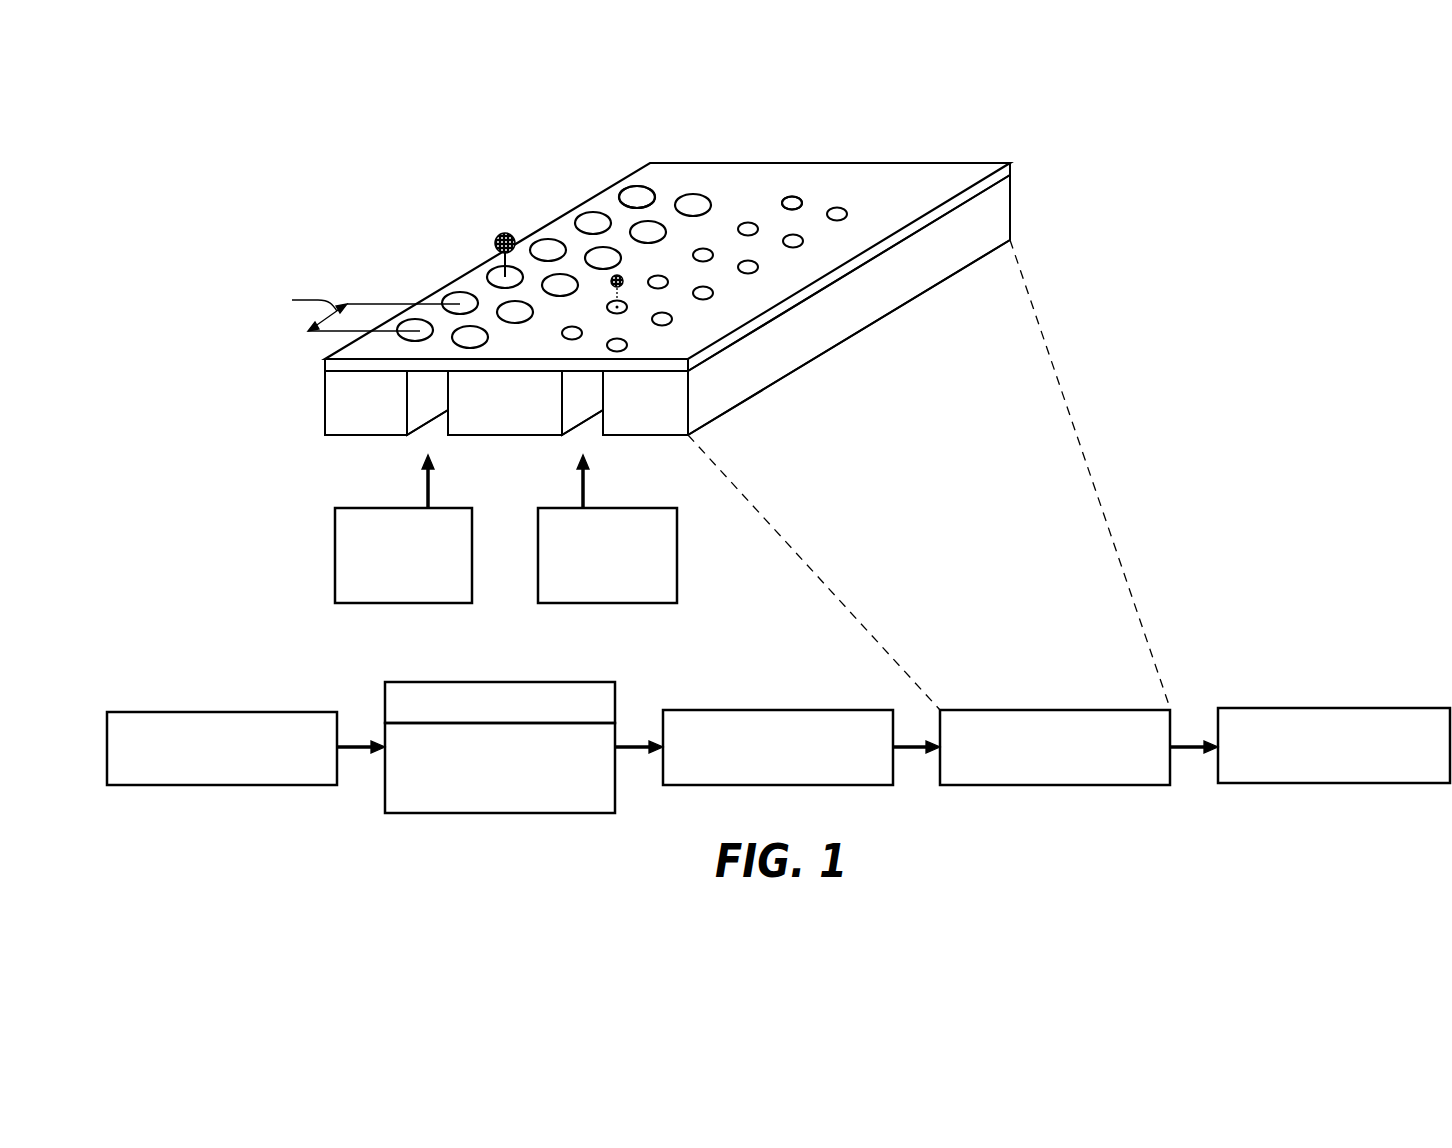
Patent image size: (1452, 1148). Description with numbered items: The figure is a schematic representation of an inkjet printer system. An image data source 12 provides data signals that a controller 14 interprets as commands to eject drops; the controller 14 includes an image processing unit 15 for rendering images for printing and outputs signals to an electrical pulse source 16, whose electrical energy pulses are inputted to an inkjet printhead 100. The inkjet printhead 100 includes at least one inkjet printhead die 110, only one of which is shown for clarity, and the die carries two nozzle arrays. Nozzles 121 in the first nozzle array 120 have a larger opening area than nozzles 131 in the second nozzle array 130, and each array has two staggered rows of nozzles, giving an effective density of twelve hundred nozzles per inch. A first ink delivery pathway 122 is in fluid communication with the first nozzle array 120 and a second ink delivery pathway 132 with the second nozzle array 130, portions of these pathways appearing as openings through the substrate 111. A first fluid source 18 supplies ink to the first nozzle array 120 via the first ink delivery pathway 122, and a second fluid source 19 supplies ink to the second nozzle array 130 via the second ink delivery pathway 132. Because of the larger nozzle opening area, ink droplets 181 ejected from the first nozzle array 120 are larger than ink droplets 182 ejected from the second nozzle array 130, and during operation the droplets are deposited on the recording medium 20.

The inkjet printhead 100 is at (1050, 187).
The inkjet printhead die 110 is at (822, 367).
The substrate 111 is at (875, 305).
The first nozzle array 120 is at (682, 170).
The nozzle 121 is at (637, 195).
The first ink delivery pathway 122 is at (430, 435).
The second nozzle array 130 is at (827, 193).
The nozzle 131 is at (792, 198).
The second ink delivery pathway 132 is at (583, 433).
The ink droplet 181 is at (505, 233).
The ink droplet 182 is at (615, 278).
The image data source 12 is at (243, 710).
The controller 14 is at (497, 682).
The image processing unit 15 is at (497, 813).
The electrical pulse source 16 is at (777, 710).
The first fluid source 18 is at (335, 562).
The second fluid source 19 is at (677, 555).
The recording medium 20 is at (1335, 708).